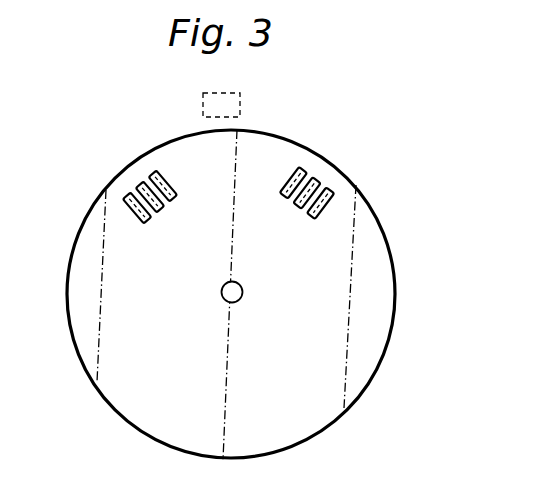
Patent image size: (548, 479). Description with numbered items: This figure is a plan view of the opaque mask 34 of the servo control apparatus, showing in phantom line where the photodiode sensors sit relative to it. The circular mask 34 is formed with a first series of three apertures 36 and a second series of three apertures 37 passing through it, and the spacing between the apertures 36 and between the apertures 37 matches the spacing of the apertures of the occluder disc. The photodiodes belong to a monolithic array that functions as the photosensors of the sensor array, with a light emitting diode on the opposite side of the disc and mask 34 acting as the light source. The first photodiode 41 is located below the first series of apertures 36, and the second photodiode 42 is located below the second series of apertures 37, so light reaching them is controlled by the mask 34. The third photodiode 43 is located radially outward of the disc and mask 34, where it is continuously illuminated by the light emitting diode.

The opaque mask 34 is at (394, 290).
The first series of three apertures 36 is at (152, 174).
The second series of three apertures 37 is at (303, 170).
The first photodiode 41 is at (157, 217).
The second photodiode 42 is at (298, 215).
The third photodiode 43 is at (240, 105).